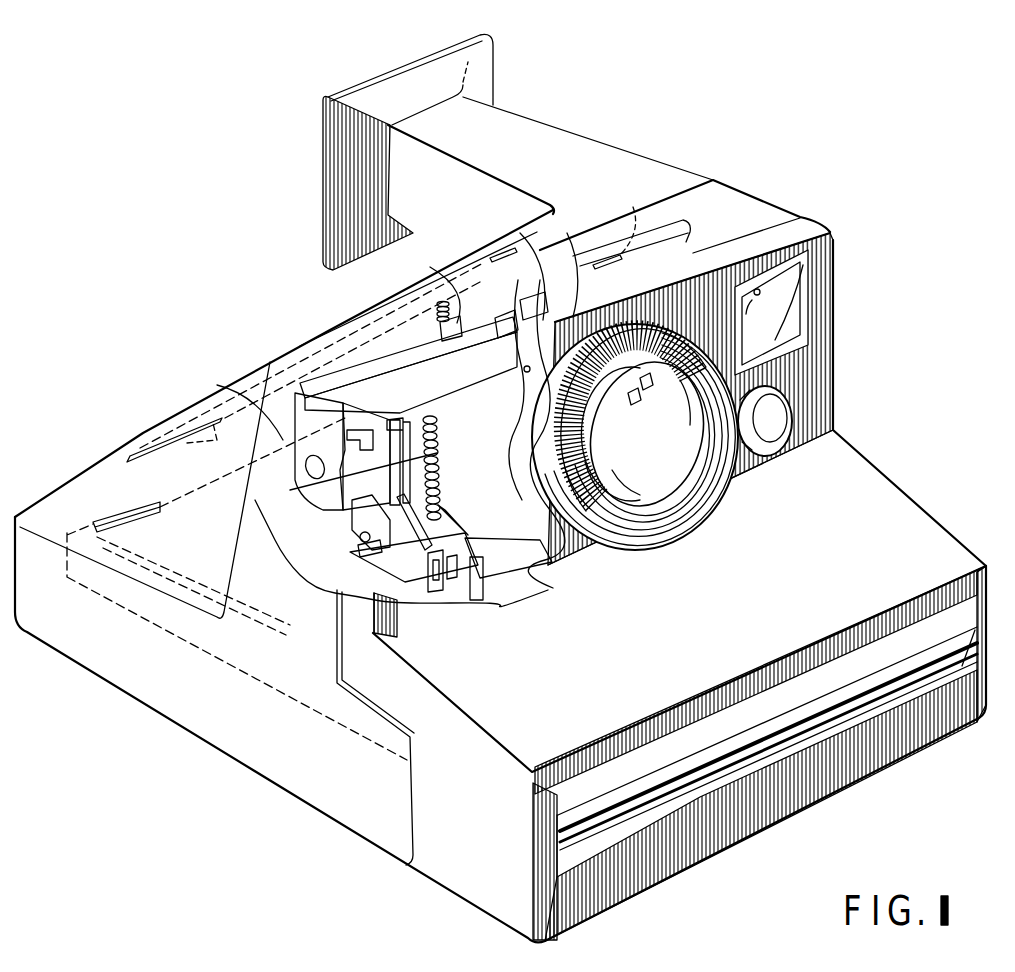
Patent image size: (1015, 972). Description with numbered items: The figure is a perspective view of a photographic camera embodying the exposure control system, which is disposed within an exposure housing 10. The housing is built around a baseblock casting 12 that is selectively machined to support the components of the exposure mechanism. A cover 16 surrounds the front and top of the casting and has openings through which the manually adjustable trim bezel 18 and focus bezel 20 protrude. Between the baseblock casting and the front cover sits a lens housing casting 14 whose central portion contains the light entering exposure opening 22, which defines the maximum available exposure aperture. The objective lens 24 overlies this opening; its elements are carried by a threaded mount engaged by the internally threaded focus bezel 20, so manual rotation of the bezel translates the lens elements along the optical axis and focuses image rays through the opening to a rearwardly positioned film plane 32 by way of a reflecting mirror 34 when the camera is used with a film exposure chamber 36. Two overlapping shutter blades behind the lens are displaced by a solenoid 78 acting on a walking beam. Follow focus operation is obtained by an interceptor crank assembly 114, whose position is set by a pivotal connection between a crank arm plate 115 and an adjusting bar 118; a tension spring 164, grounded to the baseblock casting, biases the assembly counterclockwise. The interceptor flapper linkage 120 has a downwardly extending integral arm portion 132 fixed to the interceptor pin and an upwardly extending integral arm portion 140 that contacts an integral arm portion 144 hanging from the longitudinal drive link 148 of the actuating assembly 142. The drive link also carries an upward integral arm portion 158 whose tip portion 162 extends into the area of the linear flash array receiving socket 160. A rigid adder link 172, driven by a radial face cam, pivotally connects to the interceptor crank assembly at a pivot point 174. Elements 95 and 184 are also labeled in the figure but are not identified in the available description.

The exposure housing 10 is at (345, 366).
The baseblock casting 12 is at (430, 267).
The lens housing casting 14 is at (467, 606).
The cover 16 is at (840, 367).
The trim bezel 18 is at (783, 401).
The focus bezel 20 is at (703, 343).
The light entering exposure opening 22 is at (683, 397).
The objective lens 24 is at (643, 451).
The film plane 32 is at (128, 512).
The reflecting mirror 34 is at (155, 442).
The film exposure chamber 36 is at (163, 481).
The solenoid 78 is at (217, 385).
The viewfinder window 95 is at (833, 280).
The interceptor crank assembly 114 is at (397, 637).
The crank arm plate 115 is at (355, 515).
The adjusting bar 118 is at (358, 548).
The interceptor flapper linkage 120 is at (430, 533).
The integral arm portion 132 is at (455, 522).
The integral arm portion 140 is at (400, 600).
The actuating assembly 142 is at (500, 390).
The integral arm portion 144 is at (290, 490).
The longitudinal drive link 148 is at (437, 323).
The integral arm portion 158 is at (567, 236).
The linear flash array receiving socket 160 is at (633, 210).
The tip portion 162 is at (520, 233).
The tension spring 164 is at (445, 450).
The adder link 172 is at (526, 562).
The pivot point 174 is at (500, 586).
The cutaway edge 184 is at (330, 562).